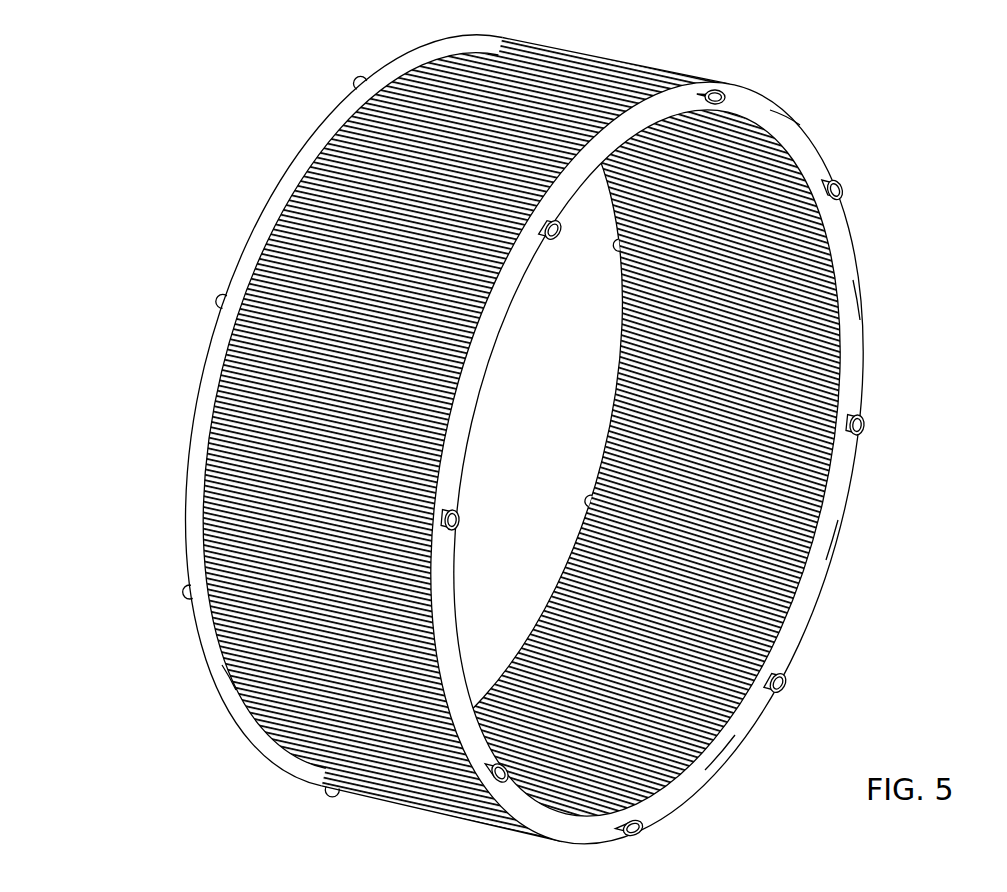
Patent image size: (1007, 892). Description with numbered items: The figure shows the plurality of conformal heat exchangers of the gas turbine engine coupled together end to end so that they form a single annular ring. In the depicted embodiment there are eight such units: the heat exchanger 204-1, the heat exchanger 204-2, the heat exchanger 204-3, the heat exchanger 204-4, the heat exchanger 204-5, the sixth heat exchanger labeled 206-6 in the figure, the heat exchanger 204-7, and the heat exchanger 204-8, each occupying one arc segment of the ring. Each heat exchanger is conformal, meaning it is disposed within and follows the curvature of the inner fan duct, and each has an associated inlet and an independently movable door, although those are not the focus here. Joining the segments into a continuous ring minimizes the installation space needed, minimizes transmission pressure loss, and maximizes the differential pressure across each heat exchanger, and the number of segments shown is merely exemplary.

The heat exchanger 204-1 is at (832, 541).
The heat exchanger 204-2 is at (856, 302).
The heat exchanger 204-3 is at (786, 124).
The heat exchanger 204-4 is at (408, 58).
The heat exchanger 204-5 is at (258, 218).
The heat exchanger 204-7 is at (228, 685).
The heat exchanger 204-8 is at (718, 757).
The boss 206-6 is at (186, 502).